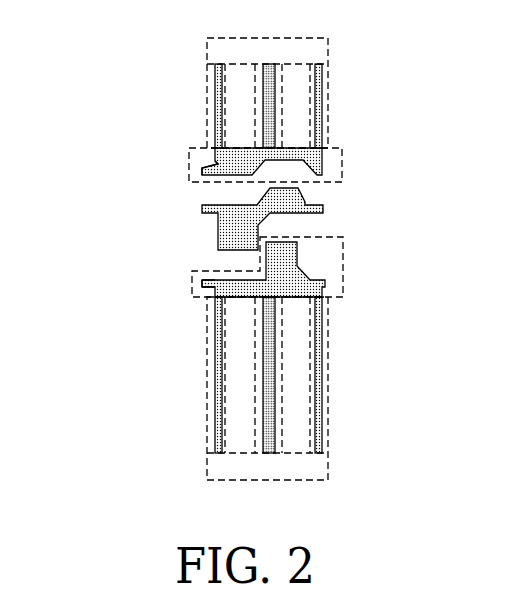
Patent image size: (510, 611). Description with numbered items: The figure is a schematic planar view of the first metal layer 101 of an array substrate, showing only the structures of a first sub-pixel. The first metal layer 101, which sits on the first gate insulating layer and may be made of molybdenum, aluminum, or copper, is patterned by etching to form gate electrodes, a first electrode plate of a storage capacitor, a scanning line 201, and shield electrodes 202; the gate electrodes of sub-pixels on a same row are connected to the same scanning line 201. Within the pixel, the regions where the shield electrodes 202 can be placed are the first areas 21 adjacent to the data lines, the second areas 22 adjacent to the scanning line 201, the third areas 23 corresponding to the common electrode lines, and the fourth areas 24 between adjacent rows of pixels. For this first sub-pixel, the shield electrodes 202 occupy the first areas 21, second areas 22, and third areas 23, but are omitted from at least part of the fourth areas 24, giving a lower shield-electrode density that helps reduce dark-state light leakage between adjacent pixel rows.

The first metal layer 101 is at (120, 27).
The first areas 21 is at (213, 109).
The second areas 22 is at (340, 167).
The third areas 23 is at (282, 85).
The fourth areas 24 is at (313, 55).
The scanning line 201 is at (218, 233).
The shield electrodes 202 is at (199, 167).